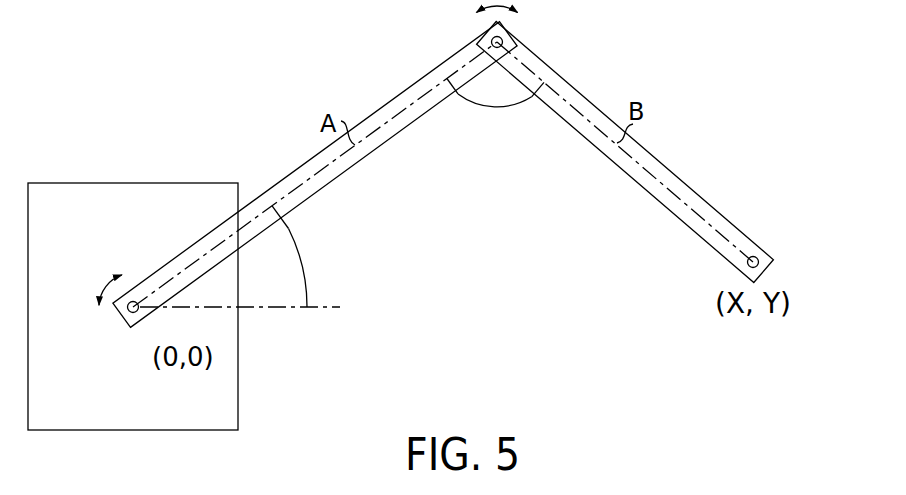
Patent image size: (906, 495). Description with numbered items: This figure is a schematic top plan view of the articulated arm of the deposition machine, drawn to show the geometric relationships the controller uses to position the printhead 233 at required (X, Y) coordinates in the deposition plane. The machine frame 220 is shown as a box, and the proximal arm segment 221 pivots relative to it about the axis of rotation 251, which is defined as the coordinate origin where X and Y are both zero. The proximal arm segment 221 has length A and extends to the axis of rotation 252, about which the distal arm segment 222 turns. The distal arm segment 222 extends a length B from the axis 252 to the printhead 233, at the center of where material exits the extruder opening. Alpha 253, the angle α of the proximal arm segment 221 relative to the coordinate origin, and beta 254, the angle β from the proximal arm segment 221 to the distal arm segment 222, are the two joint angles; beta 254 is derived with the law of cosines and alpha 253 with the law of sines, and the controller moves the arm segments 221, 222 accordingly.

The machine frame 220 is at (238, 373).
The proximal arm segment 221 is at (340, 175).
The distal arm segment 222 is at (663, 207).
The printhead 233 is at (757, 257).
The axis of rotation of the proximal arm segment 251 is at (125, 321).
The axis of rotation between the arm segments 252 is at (503, 41).
The alpha 253 is at (306, 284).
The beta 254 is at (502, 104).